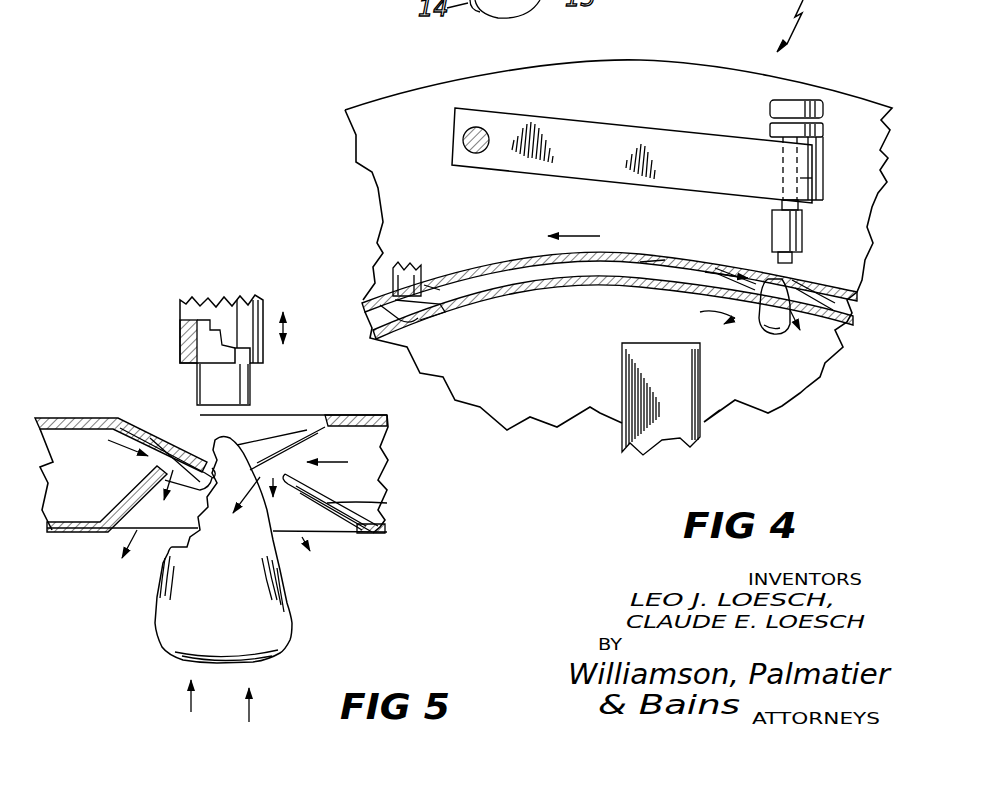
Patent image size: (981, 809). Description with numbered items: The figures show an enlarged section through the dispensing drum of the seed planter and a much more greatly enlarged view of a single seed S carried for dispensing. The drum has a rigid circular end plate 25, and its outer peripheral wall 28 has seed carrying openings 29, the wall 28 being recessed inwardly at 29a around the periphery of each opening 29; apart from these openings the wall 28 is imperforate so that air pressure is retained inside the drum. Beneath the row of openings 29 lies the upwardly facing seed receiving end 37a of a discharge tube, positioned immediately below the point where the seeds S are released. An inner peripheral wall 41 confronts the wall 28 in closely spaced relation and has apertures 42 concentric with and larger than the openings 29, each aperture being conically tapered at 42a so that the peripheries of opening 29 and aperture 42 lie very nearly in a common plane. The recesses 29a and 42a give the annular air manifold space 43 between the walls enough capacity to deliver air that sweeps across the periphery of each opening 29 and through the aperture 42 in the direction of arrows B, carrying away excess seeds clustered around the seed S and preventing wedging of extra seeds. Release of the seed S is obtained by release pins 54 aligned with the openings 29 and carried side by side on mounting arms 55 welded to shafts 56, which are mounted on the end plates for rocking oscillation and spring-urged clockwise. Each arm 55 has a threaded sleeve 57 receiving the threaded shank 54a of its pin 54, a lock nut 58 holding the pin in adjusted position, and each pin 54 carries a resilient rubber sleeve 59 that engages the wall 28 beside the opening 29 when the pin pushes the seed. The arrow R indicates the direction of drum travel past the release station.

In FIG. 4, the end plate 25 is at (709, 66).
In FIG. 4, the peripheral wall 28 is at (502, 262).
In FIG. 5, the peripheral wall 28 is at (50, 418).
In FIG. 5, the seed carrying opening 29 is at (196, 440).
In FIG. 5, the recessed portion 29a is at (155, 425).
In FIG. 4, the seed receiving end 37a is at (622, 377).
In FIG. 4, the inner peripheral wall 41 is at (556, 283).
In FIG. 5, the inner peripheral wall 41 is at (380, 533).
In FIG. 4, the aperture 42 is at (442, 304).
In FIG. 5, the aperture 42 is at (305, 515).
In FIG. 5, the tapered portion 42a is at (387, 503).
In FIG. 4, the annular air manifold space 43 is at (628, 268).
In FIG. 5, the annular air manifold space 43 is at (340, 440).
In FIG. 4, the release pin 54 is at (795, 258).
In FIG. 5, the release pin 54 is at (203, 370).
In FIG. 4, the threaded shank 54a is at (812, 181).
In FIG. 4, the mounting arm 55 is at (554, 130).
In FIG. 4, the shaft 56 is at (462, 141).
In FIG. 4, the threaded sleeve 57 is at (822, 152).
In FIG. 4, the lock nut 58 is at (770, 128).
In FIG. 4, the resilient rubber sleeve 59 is at (772, 220).
In FIG. 5, the resilient rubber sleeve 59 is at (226, 298).
In FIG. 4, the arrows B is at (735, 302).
In FIG. 5, the arrows B is at (148, 498).
In FIG. 4, the seed S is at (770, 326).
In FIG. 5, the seed S is at (163, 624).
In FIG. 4, the direction of travel R is at (590, 236).